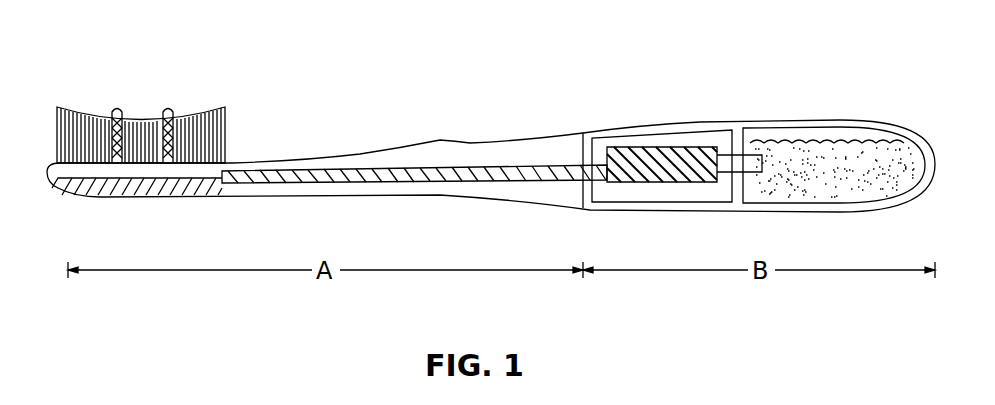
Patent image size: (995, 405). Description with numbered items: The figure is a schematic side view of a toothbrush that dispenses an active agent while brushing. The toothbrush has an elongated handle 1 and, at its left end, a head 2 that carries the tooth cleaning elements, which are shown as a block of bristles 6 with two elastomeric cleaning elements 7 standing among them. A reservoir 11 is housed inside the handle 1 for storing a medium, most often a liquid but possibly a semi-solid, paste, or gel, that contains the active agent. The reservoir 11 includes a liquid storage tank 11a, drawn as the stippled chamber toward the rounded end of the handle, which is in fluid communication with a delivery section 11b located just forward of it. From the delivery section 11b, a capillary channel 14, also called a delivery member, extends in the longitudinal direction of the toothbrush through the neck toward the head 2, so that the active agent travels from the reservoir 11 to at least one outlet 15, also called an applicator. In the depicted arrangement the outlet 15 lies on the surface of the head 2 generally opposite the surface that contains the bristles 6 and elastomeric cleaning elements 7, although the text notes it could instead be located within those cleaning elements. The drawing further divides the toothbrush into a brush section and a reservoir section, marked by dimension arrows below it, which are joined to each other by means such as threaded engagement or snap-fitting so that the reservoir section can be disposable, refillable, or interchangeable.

The head 2 is at (93, 42).
The handle 1 is at (517, 152).
The bristles 6 is at (143, 125).
The elastomeric cleaning elements 7 is at (167, 107).
The capillary channel 14 is at (303, 197).
The outlet 15 is at (122, 198).
The reservoir 11 is at (706, 92).
The liquid storage tank 11a is at (825, 155).
The delivery section 11b is at (660, 147).